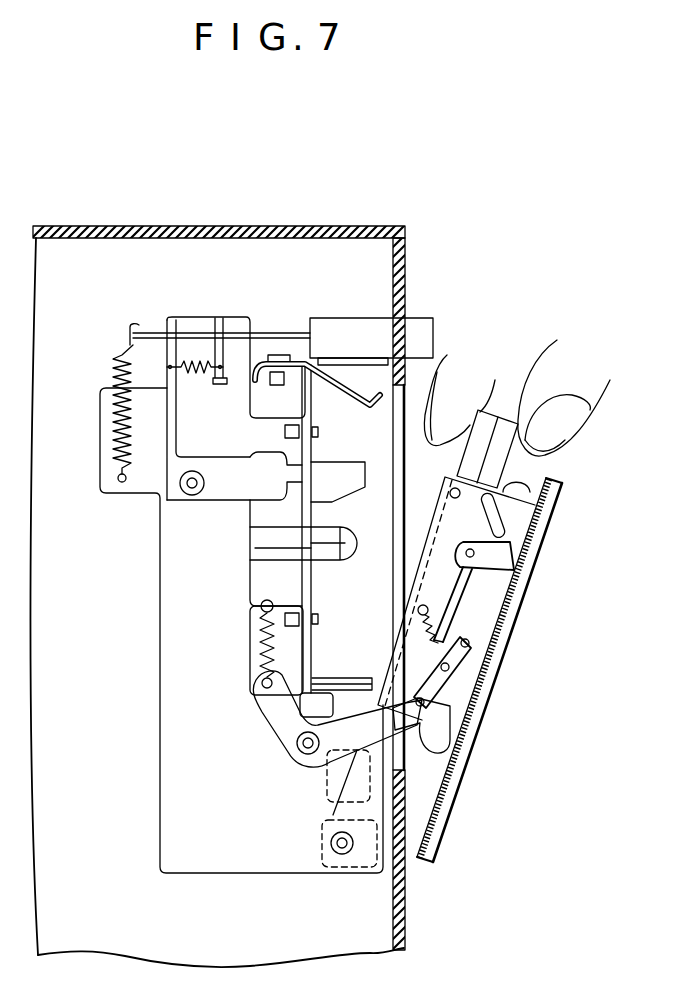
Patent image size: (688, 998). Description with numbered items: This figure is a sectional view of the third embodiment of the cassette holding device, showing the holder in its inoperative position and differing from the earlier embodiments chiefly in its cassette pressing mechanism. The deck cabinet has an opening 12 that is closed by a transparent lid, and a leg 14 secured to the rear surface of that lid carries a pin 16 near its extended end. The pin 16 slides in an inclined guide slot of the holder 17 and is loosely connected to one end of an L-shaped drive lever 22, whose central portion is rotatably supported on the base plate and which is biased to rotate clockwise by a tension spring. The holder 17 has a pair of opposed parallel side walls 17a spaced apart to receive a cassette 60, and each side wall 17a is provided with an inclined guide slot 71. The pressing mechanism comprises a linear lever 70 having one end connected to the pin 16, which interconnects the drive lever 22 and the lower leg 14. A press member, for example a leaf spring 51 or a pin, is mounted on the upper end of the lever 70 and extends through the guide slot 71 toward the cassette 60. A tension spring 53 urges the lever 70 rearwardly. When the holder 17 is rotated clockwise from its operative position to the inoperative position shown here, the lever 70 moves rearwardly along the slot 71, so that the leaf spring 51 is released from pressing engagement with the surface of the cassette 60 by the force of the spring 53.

The opening 12 is at (393, 421).
The leg 14 is at (452, 733).
The pin 16 is at (417, 758).
The holder 17 is at (482, 600).
The side wall 17a is at (483, 612).
The drive lever 22 is at (283, 722).
The leaf spring 51 is at (480, 650).
The tension spring 53 is at (430, 603).
The cassette 60 is at (470, 445).
The linear lever 70 is at (478, 696).
The inclined guide slot 71 is at (478, 626).